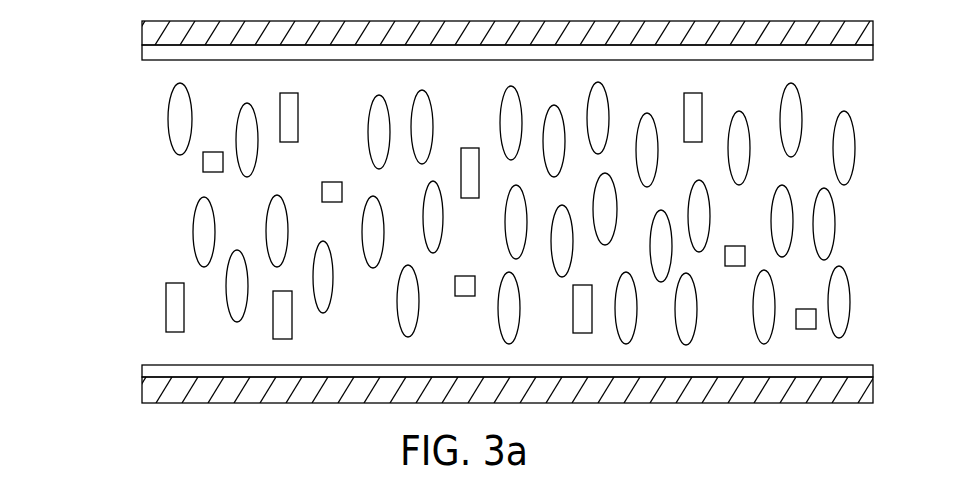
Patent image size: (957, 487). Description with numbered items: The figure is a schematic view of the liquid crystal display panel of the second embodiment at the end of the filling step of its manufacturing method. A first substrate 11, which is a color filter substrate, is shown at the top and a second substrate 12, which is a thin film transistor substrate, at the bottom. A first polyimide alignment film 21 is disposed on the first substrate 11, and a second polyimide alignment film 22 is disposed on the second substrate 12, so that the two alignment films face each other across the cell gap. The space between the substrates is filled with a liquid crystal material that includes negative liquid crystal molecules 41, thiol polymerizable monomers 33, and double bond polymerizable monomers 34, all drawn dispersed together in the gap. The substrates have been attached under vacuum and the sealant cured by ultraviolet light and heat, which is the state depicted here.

The first substrate 11 is at (142, 33).
The second substrate 12 is at (142, 390).
The first polyimide alignment film 21 is at (141, 52).
The second polyimide alignment film 22 is at (142, 367).
The thiol polymerizable monomers 33 is at (203, 165).
The double bond polymerizable monomers 34 is at (166, 310).
The negative liquid crystal molecules 41 is at (193, 240).